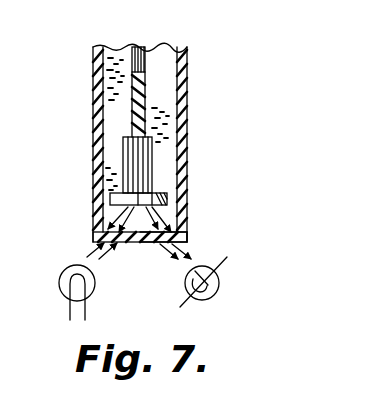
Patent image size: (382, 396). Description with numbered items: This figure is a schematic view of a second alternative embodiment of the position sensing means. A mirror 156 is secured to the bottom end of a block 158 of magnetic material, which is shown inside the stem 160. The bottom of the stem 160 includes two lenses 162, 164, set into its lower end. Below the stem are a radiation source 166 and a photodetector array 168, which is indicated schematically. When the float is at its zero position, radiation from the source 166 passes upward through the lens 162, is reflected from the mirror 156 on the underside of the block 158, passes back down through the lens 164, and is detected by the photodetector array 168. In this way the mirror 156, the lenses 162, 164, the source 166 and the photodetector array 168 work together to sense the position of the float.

The mirror 156 is at (167, 198).
The block of magnetic material 158 is at (138, 165).
The stem 160 is at (97, 137).
The lens 162 is at (118, 244).
The lens 164 is at (150, 244).
The source 166 is at (66, 283).
The photodetector array 168 is at (220, 287).